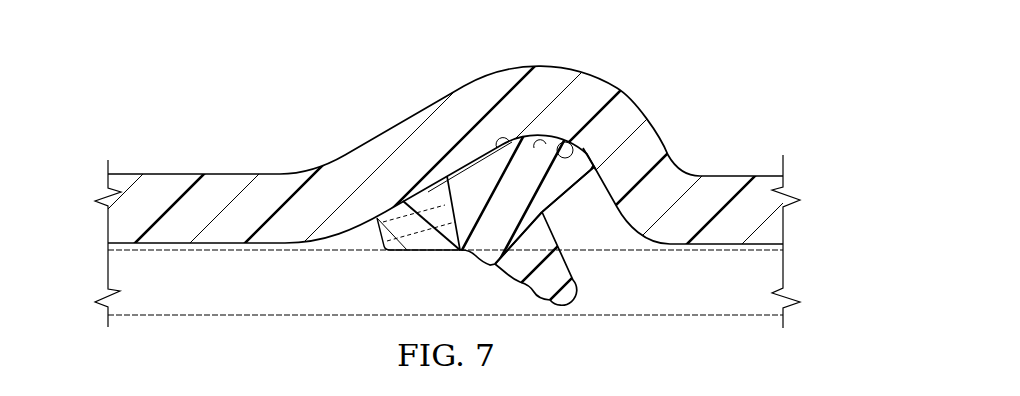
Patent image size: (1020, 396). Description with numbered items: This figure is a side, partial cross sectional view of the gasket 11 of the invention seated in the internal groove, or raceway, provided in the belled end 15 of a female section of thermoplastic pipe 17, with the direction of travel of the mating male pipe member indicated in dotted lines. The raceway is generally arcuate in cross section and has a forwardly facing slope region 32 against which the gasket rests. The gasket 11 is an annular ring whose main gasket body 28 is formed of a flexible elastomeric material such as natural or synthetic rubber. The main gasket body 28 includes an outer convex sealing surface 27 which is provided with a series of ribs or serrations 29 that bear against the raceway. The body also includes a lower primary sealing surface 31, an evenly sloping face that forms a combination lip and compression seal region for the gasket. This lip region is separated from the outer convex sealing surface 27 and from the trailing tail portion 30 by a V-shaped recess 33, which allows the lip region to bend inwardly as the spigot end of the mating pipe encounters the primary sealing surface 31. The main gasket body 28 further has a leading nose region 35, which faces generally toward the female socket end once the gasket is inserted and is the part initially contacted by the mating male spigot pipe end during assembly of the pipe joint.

The gasket 11 is at (461, 263).
The belled end 15 is at (227, 174).
The thermoplastic pipe 17 is at (723, 176).
The outer convex sealing surface 27 is at (563, 143).
The main gasket body 28 is at (598, 148).
The ribs or serrations 29 is at (501, 132).
The trailing tail portion 30 is at (540, 140).
The primary sealing surface 31 is at (534, 301).
The forwardly facing slope region 32 is at (477, 148).
The V-shaped recess 33 is at (559, 214).
The leading nose region 35 is at (367, 239).